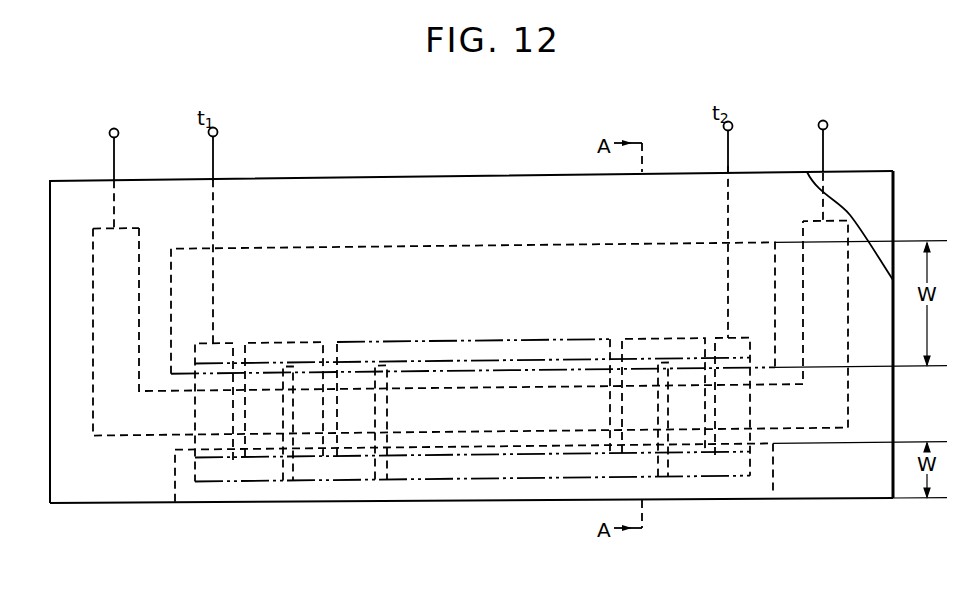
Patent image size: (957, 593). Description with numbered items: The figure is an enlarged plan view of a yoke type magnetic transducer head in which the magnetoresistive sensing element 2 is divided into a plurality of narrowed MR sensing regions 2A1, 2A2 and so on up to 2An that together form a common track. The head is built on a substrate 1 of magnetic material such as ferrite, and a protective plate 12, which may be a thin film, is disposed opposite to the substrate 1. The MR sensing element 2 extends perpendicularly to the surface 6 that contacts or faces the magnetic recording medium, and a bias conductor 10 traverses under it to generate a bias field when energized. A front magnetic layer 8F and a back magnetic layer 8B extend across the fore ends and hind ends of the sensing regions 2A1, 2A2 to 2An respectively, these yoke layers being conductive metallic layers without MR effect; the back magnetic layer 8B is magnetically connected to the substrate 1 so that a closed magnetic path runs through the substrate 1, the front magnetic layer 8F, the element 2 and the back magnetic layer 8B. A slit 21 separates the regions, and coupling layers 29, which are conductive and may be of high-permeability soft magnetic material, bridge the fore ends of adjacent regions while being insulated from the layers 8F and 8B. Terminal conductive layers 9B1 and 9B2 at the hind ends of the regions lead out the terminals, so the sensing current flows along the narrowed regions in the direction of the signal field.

The substrate 1 is at (895, 192).
The MR sensing element 2 is at (197, 428).
The surface 6 is at (528, 501).
The back magnetic layer 8B is at (352, 250).
The front magnetic layer 8F is at (773, 490).
The terminal conductive layer 9B1 is at (222, 343).
The terminal conductive layer 9B2 is at (725, 343).
The bias conductor 10 is at (853, 419).
The protective plate 12 is at (880, 390).
The slit 21 is at (228, 406).
The coupling layer 29 is at (302, 345).
The MR sensing region 2A1 is at (232, 385).
The MR sensing region 2A2 is at (622, 278).
The MR sensing region 2An is at (712, 380).